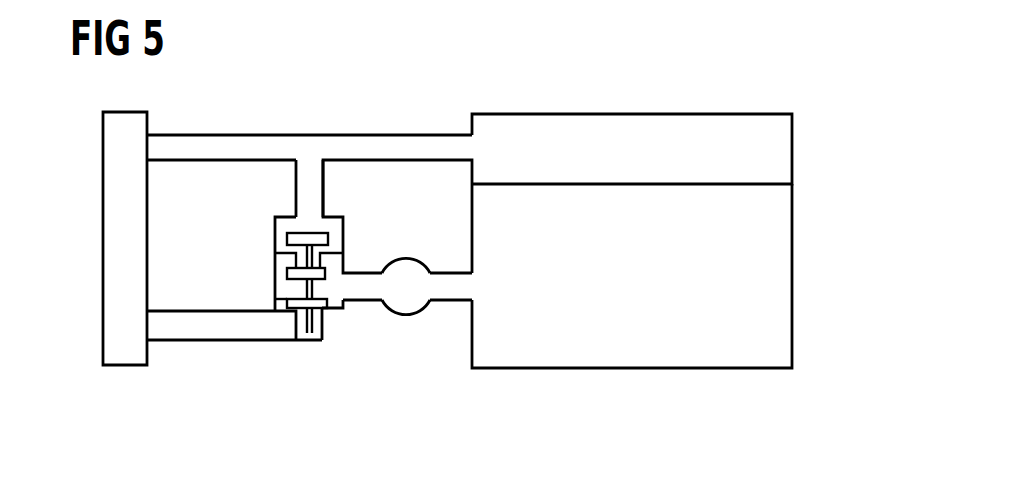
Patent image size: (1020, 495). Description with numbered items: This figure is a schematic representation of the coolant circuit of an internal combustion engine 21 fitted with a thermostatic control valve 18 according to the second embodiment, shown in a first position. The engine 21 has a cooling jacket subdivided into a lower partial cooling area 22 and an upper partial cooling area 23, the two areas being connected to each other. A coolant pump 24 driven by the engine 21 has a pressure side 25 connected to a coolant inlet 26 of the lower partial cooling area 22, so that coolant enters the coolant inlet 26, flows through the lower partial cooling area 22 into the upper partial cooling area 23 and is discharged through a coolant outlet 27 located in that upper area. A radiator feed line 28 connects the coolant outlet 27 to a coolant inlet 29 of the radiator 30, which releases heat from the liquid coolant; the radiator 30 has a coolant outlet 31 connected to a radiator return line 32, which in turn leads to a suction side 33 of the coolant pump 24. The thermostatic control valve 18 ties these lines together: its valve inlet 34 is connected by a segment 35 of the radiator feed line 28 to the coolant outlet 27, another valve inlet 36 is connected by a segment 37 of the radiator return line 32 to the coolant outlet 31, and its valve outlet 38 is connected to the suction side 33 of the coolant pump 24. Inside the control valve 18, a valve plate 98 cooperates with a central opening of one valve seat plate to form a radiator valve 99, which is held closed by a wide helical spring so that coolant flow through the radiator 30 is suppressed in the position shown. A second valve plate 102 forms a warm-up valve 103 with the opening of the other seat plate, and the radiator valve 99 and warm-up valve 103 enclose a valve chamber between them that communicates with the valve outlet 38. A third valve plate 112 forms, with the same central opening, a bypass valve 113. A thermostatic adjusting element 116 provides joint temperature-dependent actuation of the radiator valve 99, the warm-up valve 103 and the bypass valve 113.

The thermostatic control valve 18 is at (265, 257).
The internal combustion engine 21 is at (688, 376).
The lower partial cooling area 22 is at (571, 343).
The upper partial cooling area 23 is at (635, 137).
The coolant pump 24 is at (417, 297).
The pressure side 25 is at (445, 300).
The coolant inlet 26 is at (467, 289).
The coolant outlet 27 is at (469, 150).
The radiator feed line 28 is at (310, 110).
The coolant inlet of the radiator 29 is at (148, 148).
The radiator 30 is at (103, 228).
The coolant outlet of the radiator 31 is at (150, 328).
The radiator return line 32 is at (248, 352).
The suction side 33 is at (372, 302).
The valve inlet 34 is at (305, 213).
The segment of the radiator feed line 35 is at (369, 147).
The valve inlet 36 is at (307, 312).
The segment of the radiator return line 37 is at (178, 328).
The valve outlet 38 is at (342, 288).
The valve plate 98 is at (275, 303).
The radiator valve 99 is at (334, 307).
The valve plate 102 is at (330, 236).
The warm-up valve 103 is at (280, 232).
The third valve plate 112 is at (277, 263).
The bypass valve 113 is at (279, 277).
The thermostatic adjusting element 116 is at (313, 259).